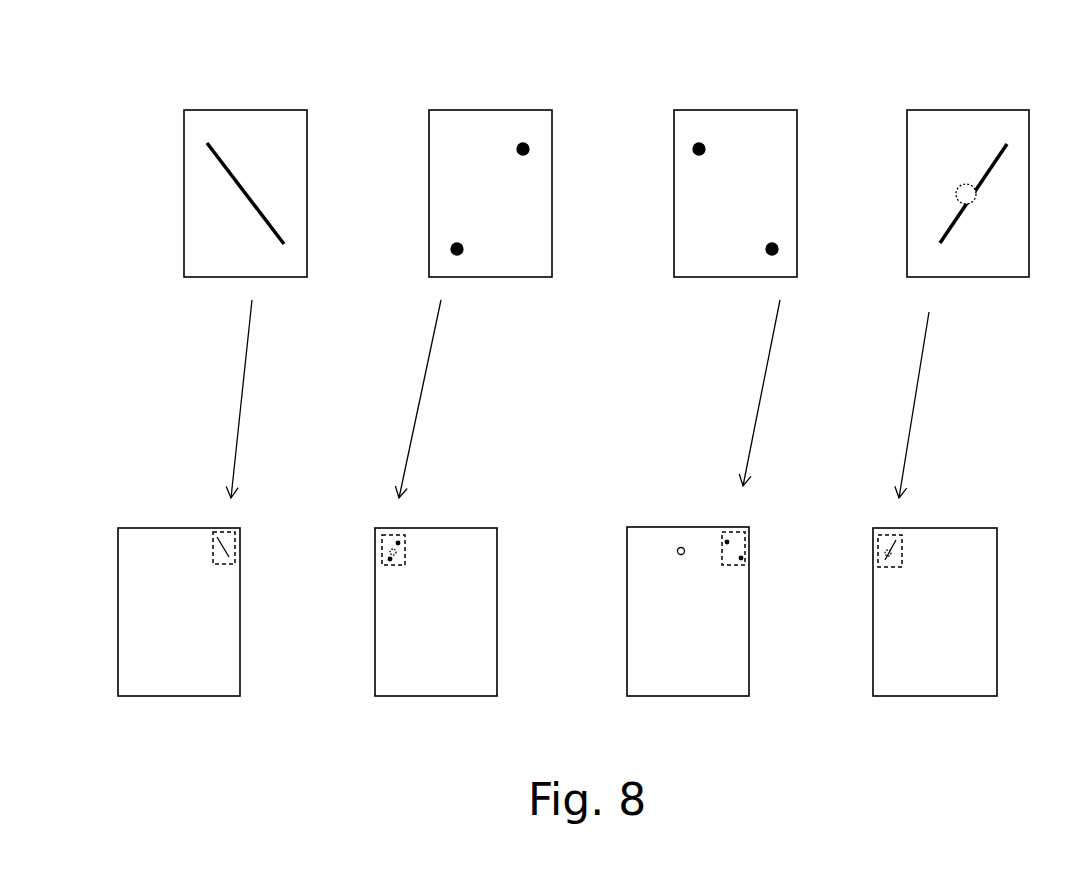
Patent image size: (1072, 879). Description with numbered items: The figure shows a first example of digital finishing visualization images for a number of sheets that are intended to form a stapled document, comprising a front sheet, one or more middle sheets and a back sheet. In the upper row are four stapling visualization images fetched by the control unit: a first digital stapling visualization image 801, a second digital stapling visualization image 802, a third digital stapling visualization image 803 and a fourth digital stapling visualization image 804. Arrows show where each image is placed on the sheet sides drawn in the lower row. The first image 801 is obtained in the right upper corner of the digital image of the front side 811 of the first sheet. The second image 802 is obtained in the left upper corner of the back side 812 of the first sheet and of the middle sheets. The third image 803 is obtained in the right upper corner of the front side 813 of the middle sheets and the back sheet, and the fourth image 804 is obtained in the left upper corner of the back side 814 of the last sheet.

The first digital stapling visualization image 801 is at (211, 110).
The second digital stapling visualization image 802 is at (457, 110).
The third digital stapling visualization image 803 is at (700, 110).
The fourth digital stapling visualization image 804 is at (933, 110).
The front side of the first sheet 811 is at (145, 528).
The back side of the first sheet and of the one or more middle sheets 812 is at (478, 528).
The front side of the one or more middle sheets and of the back sheet 813 is at (657, 527).
The back side of the last sheet 814 is at (978, 528).